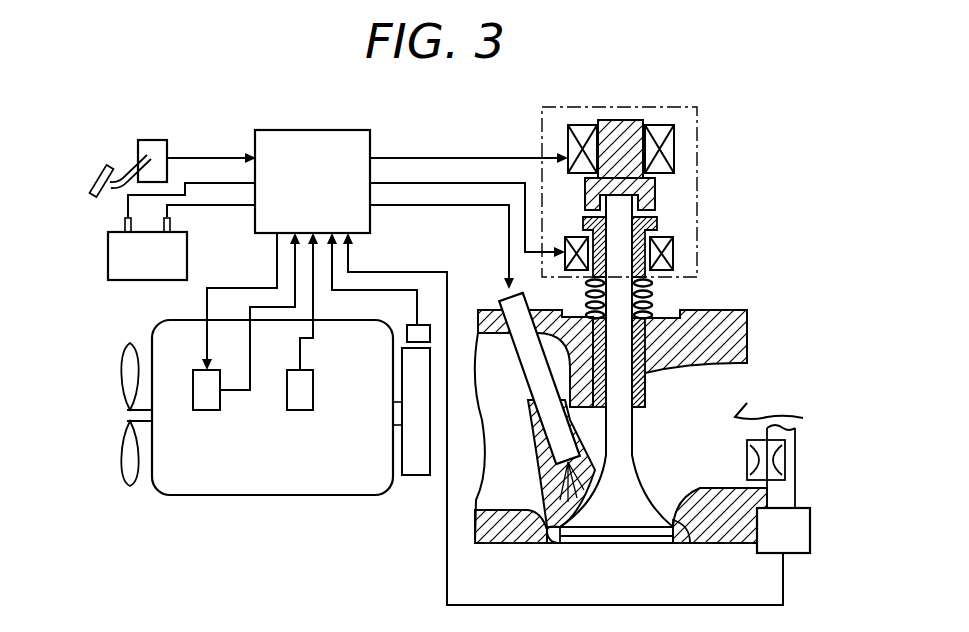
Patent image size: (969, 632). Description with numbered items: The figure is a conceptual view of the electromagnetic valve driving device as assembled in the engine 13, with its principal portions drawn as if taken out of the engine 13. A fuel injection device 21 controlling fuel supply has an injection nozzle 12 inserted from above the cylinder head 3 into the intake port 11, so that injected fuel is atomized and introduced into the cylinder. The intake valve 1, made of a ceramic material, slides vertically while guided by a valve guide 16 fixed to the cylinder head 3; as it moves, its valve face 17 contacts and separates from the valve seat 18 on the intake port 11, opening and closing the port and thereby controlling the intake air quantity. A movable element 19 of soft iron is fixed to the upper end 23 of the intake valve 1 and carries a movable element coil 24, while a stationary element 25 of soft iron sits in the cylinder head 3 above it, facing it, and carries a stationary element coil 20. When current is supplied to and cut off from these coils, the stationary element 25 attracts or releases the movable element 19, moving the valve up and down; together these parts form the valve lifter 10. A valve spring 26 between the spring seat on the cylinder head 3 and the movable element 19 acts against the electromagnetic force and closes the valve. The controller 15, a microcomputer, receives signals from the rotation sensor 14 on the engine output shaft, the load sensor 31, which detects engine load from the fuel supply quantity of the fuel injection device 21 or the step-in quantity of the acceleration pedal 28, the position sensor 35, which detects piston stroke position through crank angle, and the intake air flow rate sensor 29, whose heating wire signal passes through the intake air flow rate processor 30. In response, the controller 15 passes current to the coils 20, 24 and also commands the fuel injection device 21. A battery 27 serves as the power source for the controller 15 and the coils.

The intake valve 1 is at (625, 443).
The cylinder head 3 is at (735, 310).
The valve lifter 10 is at (541, 125).
The intake port 11 is at (744, 404).
The injection nozzle 12 is at (548, 406).
The engine 13 is at (302, 480).
The rotation sensor 14 is at (407, 334).
The controller 15 is at (316, 130).
The valve guide 16 is at (648, 386).
The valve face 17 is at (546, 540).
The valve seat 18 is at (687, 543).
The movable element 19 is at (658, 222).
The stationary element coil 20 is at (578, 127).
The fuel injection device 21 is at (221, 408).
The upper end 23 is at (657, 200).
The movable element coil 24 is at (570, 237).
The stationary element 25 is at (630, 122).
The valve spring 26 is at (670, 290).
The battery 27 is at (118, 256).
The acceleration pedal 28 is at (155, 147).
The intake air flow rate sensor 29 is at (786, 461).
The intake air flow rate processor 30 is at (811, 528).
The load sensor 31 is at (151, 143).
The position sensor 35 is at (314, 408).